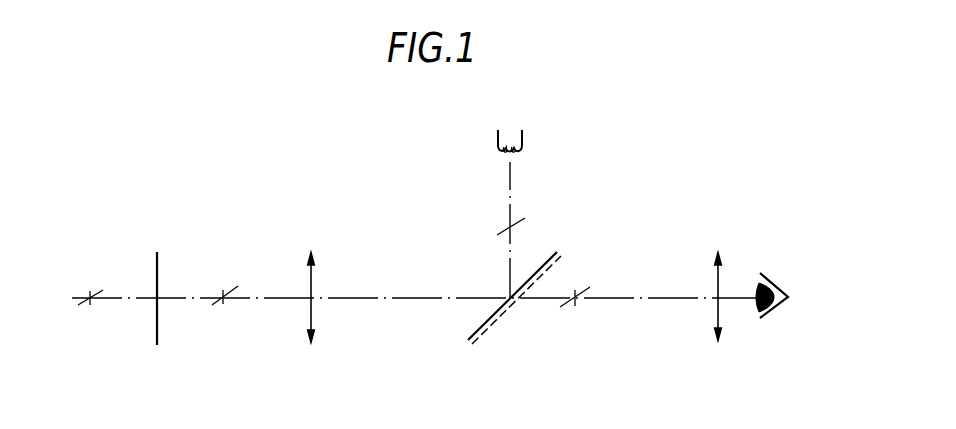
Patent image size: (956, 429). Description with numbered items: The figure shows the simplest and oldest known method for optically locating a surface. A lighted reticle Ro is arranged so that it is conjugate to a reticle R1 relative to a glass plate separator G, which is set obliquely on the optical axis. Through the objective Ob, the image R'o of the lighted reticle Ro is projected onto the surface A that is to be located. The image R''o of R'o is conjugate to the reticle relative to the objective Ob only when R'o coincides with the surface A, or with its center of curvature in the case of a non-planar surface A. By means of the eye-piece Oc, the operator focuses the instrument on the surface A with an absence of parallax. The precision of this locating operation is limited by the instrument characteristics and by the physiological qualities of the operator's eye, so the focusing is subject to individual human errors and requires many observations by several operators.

The image of R'o R''o is at (90, 314).
The image of lighted reticle R'o is at (221, 312).
The surface A is at (153, 316).
The objective Ob is at (312, 316).
The glass plate separator G is at (509, 316).
The lighted reticle Ro is at (497, 231).
The reticle R1 is at (574, 313).
The eye-piece Oc is at (717, 316).